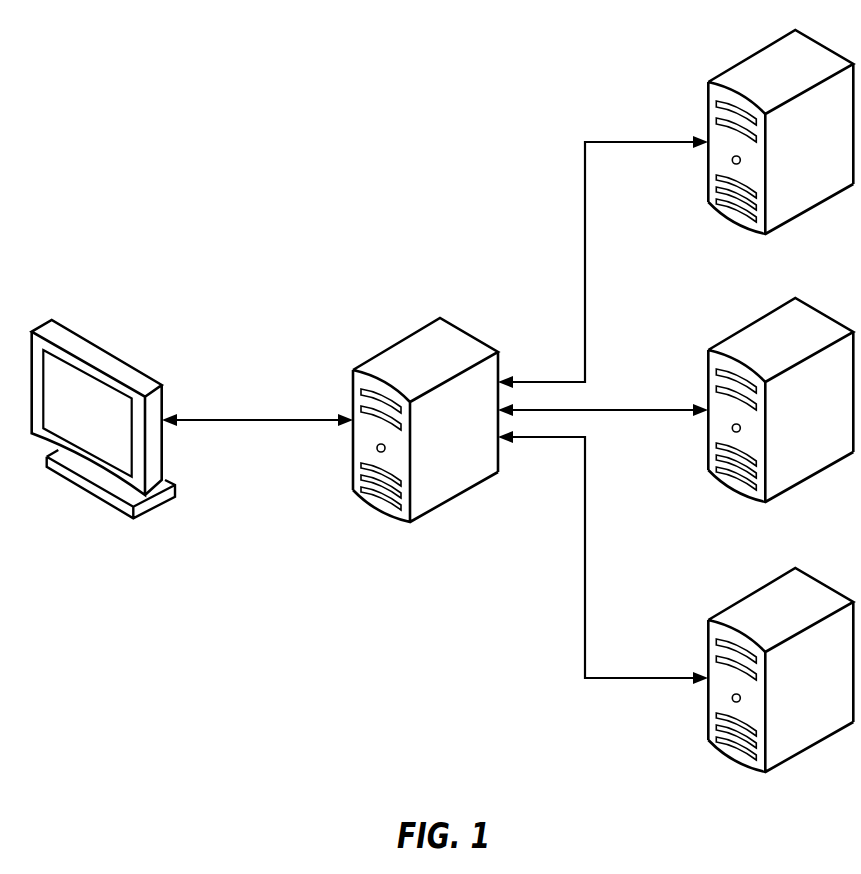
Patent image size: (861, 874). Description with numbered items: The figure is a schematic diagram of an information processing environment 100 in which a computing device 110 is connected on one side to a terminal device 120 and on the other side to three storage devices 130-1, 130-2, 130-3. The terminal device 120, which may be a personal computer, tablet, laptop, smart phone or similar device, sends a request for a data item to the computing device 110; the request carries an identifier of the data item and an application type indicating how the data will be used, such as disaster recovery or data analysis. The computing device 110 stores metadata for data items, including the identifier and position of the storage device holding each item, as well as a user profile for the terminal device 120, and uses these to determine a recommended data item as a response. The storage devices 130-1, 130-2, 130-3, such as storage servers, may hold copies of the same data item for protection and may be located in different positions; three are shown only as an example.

The information processing environment 100 is at (128, 55).
The computing device 110 is at (398, 340).
The terminal device 120 is at (103, 342).
The storage device 130-1 is at (753, 54).
The storage device 130-2 is at (753, 323).
The storage device 130-3 is at (753, 592).